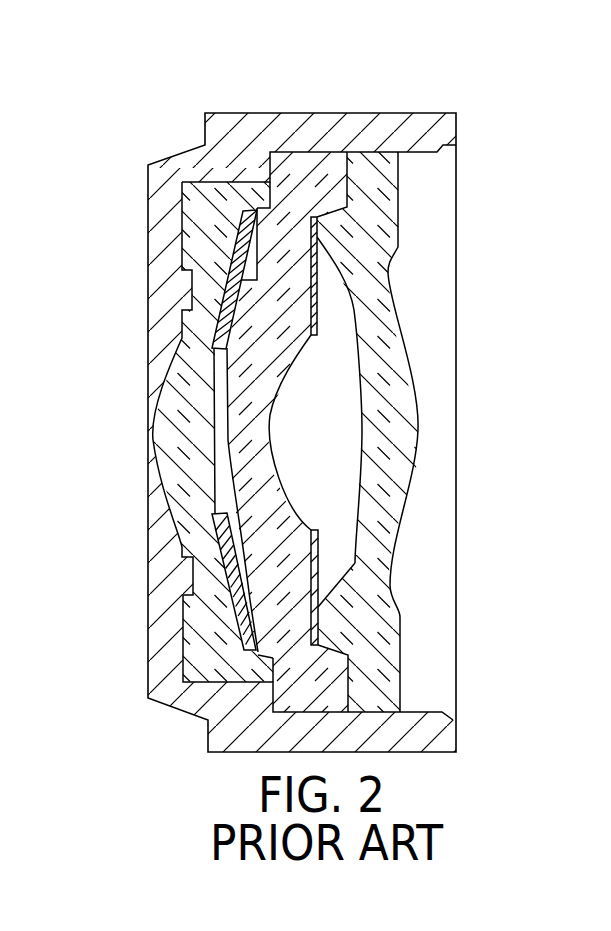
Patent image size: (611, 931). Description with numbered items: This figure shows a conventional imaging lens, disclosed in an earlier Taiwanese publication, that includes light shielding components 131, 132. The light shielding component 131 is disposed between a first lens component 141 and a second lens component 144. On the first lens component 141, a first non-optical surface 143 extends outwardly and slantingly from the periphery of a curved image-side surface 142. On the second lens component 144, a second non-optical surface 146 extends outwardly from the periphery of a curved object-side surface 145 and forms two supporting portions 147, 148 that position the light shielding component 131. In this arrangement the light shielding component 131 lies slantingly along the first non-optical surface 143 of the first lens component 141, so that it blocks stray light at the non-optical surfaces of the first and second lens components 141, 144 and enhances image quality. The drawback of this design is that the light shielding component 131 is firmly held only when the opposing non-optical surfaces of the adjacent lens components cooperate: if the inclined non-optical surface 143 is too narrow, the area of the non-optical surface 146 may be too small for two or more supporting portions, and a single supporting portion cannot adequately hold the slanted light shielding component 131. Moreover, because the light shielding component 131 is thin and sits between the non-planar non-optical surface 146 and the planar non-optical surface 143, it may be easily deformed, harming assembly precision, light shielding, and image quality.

The light shielding component 131 is at (241, 240).
The light shielding component 132 is at (318, 233).
The first lens component 141 is at (183, 665).
The curved image-side surface 142 is at (213, 373).
The first non-optical surface 143 is at (143, 581).
The second lens component 144 is at (322, 152).
The curved object-side surface 145 is at (272, 426).
The second non-optical surface 146 is at (78, 604).
The supporting portion 147 is at (262, 562).
The supporting portion 148 is at (262, 633).